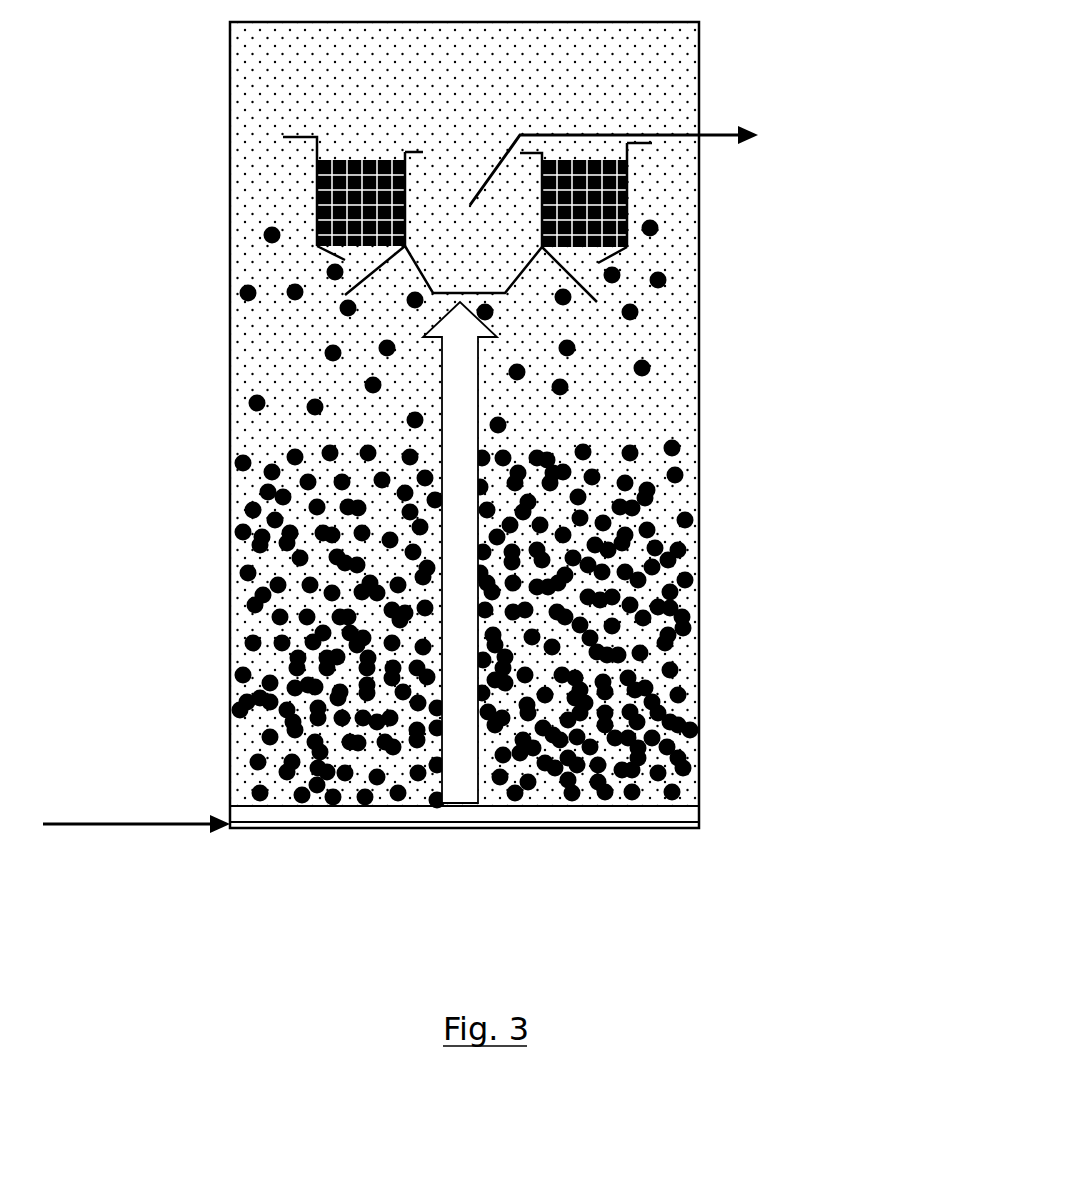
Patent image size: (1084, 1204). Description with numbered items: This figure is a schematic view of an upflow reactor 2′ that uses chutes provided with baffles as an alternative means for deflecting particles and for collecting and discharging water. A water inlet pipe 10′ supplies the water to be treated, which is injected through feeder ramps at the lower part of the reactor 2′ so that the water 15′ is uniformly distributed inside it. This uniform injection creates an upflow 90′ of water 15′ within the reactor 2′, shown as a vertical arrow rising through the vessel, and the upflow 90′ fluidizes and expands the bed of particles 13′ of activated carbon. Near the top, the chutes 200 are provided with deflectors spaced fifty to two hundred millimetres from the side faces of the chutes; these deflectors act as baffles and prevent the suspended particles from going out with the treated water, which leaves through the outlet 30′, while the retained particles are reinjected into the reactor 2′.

The reactor 2′ is at (840, 812).
The water inlet pipe 10′ is at (115, 822).
The particles of activated carbon 13′ is at (256, 408).
The water 15′ is at (257, 95).
The gas outlet 30′ is at (705, 135).
The upflow of water 90′ is at (447, 782).
The chutes 200 is at (650, 207).